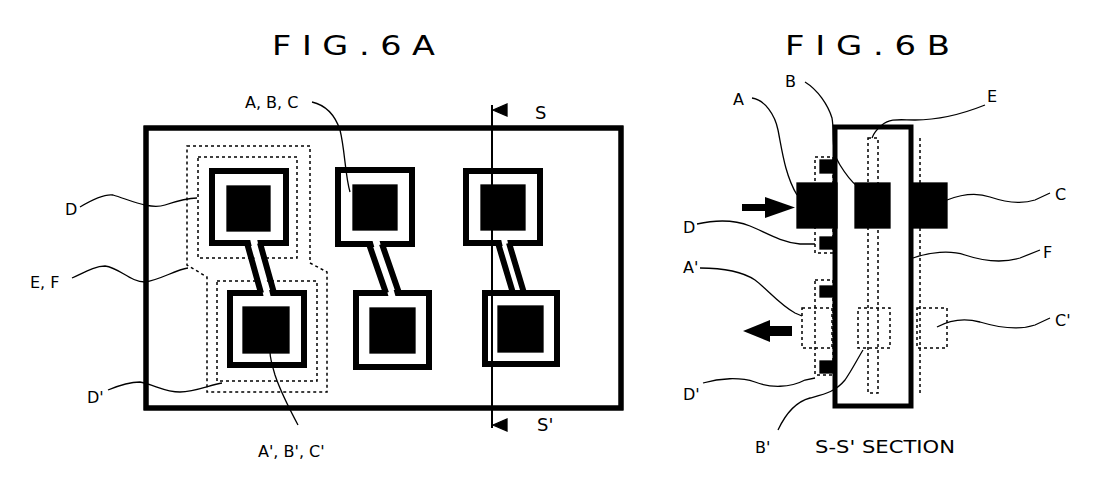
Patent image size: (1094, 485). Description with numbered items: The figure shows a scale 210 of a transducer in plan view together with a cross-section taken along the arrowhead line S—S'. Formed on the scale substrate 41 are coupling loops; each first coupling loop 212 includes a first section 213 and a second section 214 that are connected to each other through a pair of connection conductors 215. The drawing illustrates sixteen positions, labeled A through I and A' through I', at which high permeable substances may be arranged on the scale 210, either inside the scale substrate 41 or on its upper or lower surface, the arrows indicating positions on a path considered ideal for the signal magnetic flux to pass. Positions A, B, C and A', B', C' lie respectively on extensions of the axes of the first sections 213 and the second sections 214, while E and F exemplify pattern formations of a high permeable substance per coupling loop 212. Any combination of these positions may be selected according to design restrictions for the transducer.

The scale substrate 41 is at (548, 147).
The scale 210 is at (380, 142).
The first coupling loop 212 is at (566, 372).
The first section 213 is at (545, 182).
The second section 214 is at (562, 333).
The connection conductors 215 is at (520, 258).